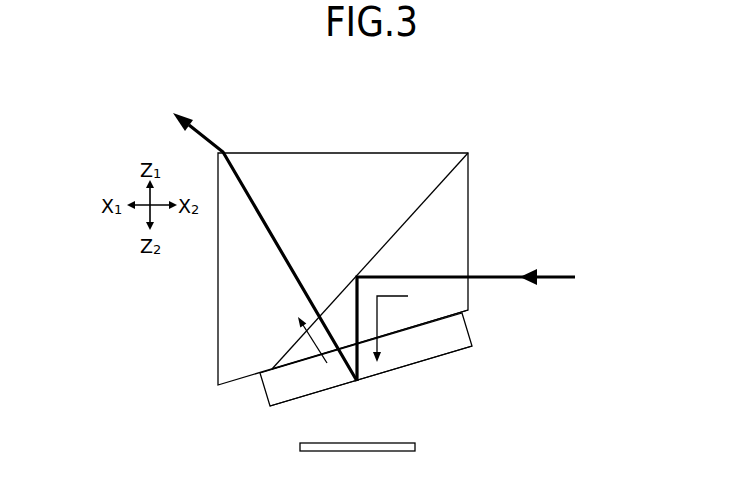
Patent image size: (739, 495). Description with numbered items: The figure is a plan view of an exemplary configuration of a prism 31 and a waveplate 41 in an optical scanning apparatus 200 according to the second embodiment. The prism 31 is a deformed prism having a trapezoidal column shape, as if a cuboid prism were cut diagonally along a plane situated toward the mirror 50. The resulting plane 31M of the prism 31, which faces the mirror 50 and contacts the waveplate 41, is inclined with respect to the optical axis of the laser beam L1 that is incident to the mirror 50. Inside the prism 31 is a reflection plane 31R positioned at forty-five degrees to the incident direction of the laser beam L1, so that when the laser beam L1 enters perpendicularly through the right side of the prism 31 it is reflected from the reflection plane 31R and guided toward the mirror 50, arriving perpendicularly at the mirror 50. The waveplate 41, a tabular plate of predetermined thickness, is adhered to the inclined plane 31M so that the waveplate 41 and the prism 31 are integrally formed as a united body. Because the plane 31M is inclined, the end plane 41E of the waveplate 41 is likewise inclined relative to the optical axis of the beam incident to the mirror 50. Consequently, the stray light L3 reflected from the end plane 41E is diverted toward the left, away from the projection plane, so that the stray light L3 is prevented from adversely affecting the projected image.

The optical scanning apparatus 200 is at (167, 93).
The prism 31 is at (470, 173).
The reflection plane 31R is at (433, 190).
The plane 31M is at (440, 313).
The waveplate 41 is at (412, 350).
The end plane 41E is at (317, 395).
The mirror 50 is at (302, 447).
The laser beam L1 is at (485, 273).
The stray light L3 is at (258, 203).